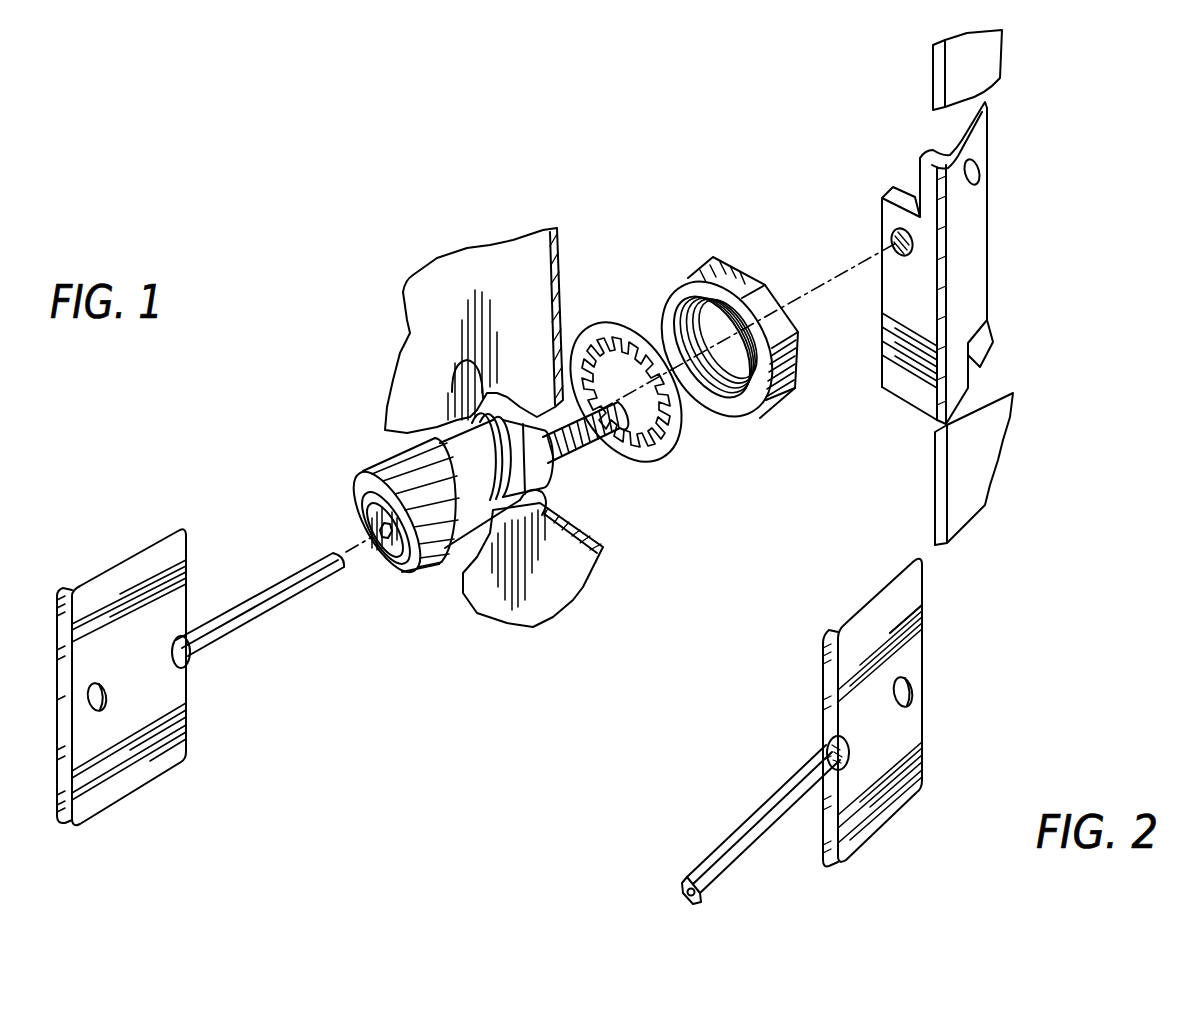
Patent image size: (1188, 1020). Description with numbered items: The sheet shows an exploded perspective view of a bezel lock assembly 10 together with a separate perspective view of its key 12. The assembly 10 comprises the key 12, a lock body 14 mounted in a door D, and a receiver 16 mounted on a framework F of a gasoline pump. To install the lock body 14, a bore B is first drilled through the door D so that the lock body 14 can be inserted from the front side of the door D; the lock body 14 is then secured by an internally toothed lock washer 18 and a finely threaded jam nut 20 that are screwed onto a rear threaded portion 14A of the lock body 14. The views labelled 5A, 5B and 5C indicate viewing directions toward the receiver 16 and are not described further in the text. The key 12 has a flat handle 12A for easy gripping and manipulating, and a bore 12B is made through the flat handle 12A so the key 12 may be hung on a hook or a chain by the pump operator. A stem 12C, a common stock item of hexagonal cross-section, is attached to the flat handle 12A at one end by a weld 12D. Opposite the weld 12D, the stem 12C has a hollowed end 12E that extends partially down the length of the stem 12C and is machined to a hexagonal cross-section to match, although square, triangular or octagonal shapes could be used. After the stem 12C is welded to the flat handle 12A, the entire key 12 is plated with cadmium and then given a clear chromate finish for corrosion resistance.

In FIG. 1, the bezel lock assembly 10 is at (215, 487).
In FIG. 1, the key 12 is at (101, 554).
In FIG. 2, the key 12 is at (900, 825).
In FIG. 2, the flat handle 12A is at (898, 612).
In FIG. 2, the bore 12B is at (910, 687).
In FIG. 2, the stem 12C is at (767, 830).
In FIG. 2, the weld 12D is at (826, 742).
In FIG. 2, the hollowed end 12E is at (683, 888).
In FIG. 1, the lock body 14 is at (385, 456).
In FIG. 1, the rear threaded portion 14A is at (540, 492).
In FIG. 1, the receiver 16 is at (988, 202).
In FIG. 1, the internally toothed lock washer 18 is at (683, 426).
In FIG. 1, the finely threaded jam nut 20 is at (784, 400).
In FIG. 1, the viewing direction 5A is at (995, 287).
In FIG. 1, the viewing direction 5B is at (878, 330).
In FIG. 1, the viewing direction 5C is at (901, 130).
In FIG. 1, the bore B is at (462, 364).
In FIG. 1, the door D is at (418, 357).
In FIG. 1, the framework F is at (983, 57).